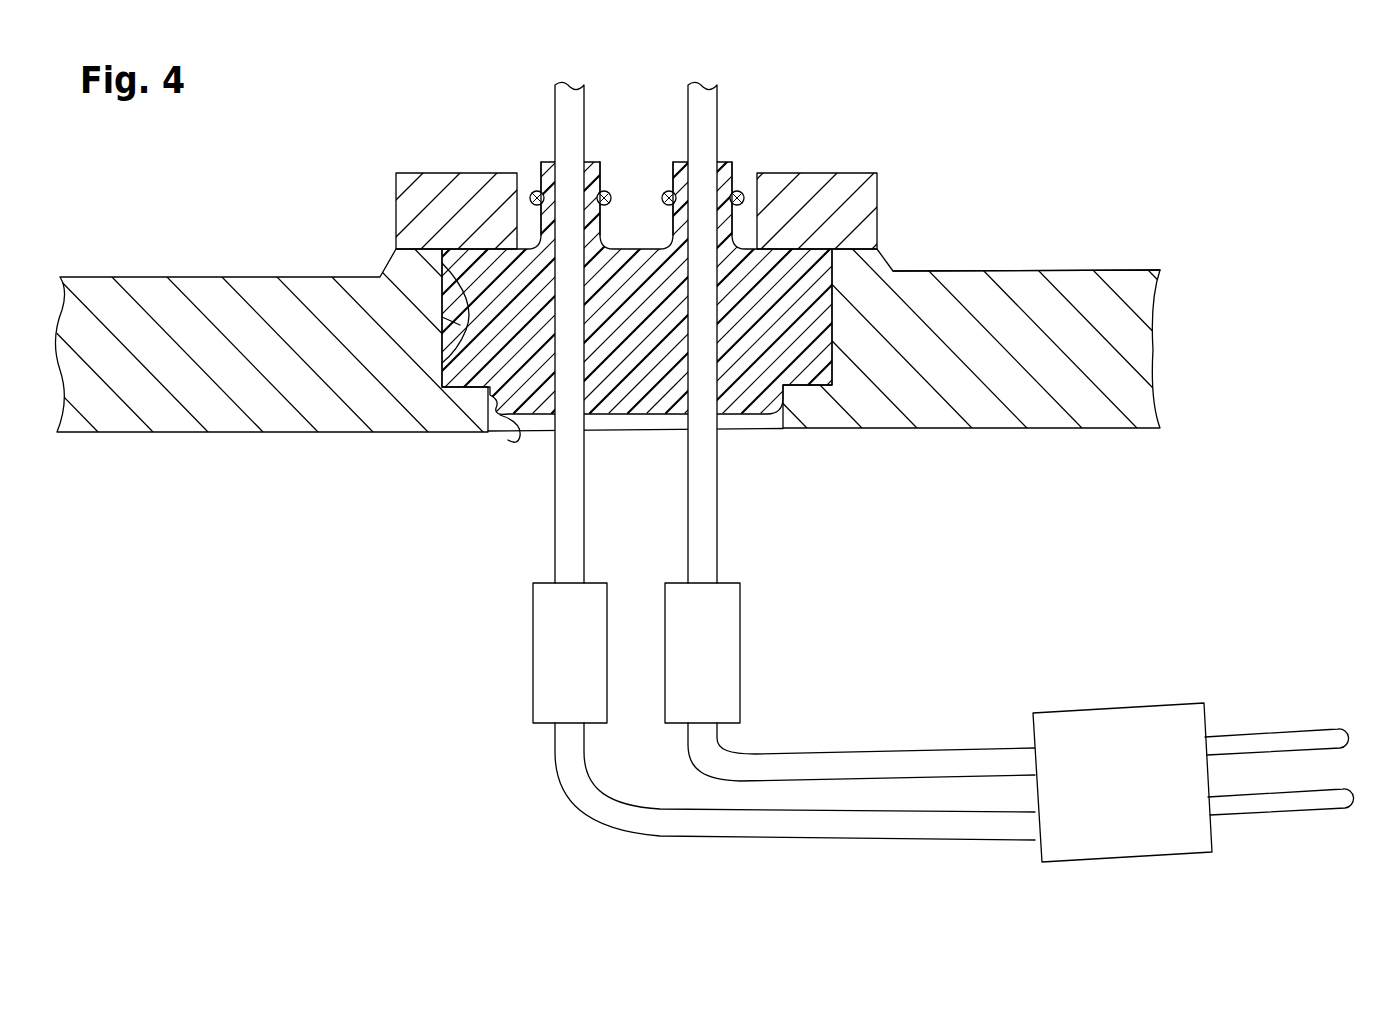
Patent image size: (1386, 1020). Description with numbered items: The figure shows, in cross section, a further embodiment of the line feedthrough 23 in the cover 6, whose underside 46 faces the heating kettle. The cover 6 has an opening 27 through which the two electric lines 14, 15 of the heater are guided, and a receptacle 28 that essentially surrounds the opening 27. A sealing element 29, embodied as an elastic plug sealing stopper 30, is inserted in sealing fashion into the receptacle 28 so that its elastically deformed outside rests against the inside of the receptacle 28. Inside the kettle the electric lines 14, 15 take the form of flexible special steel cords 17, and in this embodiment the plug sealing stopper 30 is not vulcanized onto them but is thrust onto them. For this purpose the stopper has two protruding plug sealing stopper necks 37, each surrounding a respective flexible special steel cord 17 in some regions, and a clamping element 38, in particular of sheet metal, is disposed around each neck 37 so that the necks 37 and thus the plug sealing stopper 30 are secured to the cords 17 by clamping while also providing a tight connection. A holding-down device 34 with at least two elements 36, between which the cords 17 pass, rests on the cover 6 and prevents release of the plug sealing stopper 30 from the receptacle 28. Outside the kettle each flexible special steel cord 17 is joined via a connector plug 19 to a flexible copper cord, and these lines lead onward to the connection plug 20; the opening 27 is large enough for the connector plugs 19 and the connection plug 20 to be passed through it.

The cover 6 is at (1135, 350).
The electric line 14 is at (565, 514).
The electric line 15 is at (708, 547).
The flexible special steel cord 17 is at (629, 332).
The connector plug 19 is at (548, 672).
The connection plug 20 is at (1135, 730).
The line feedthrough 23 is at (376, 180).
The opening 27 is at (520, 440).
The receptacle 28 is at (442, 278).
The sealing element 29 is at (687, 332).
The plug sealing stopper 30 is at (782, 357).
The holding-down device 34 is at (685, 173).
The elements of the holding-down device 36 is at (417, 190).
The plug sealing stopper neck 37 is at (593, 158).
The clamping element 38 is at (527, 190).
The underside 46 is at (1072, 270).